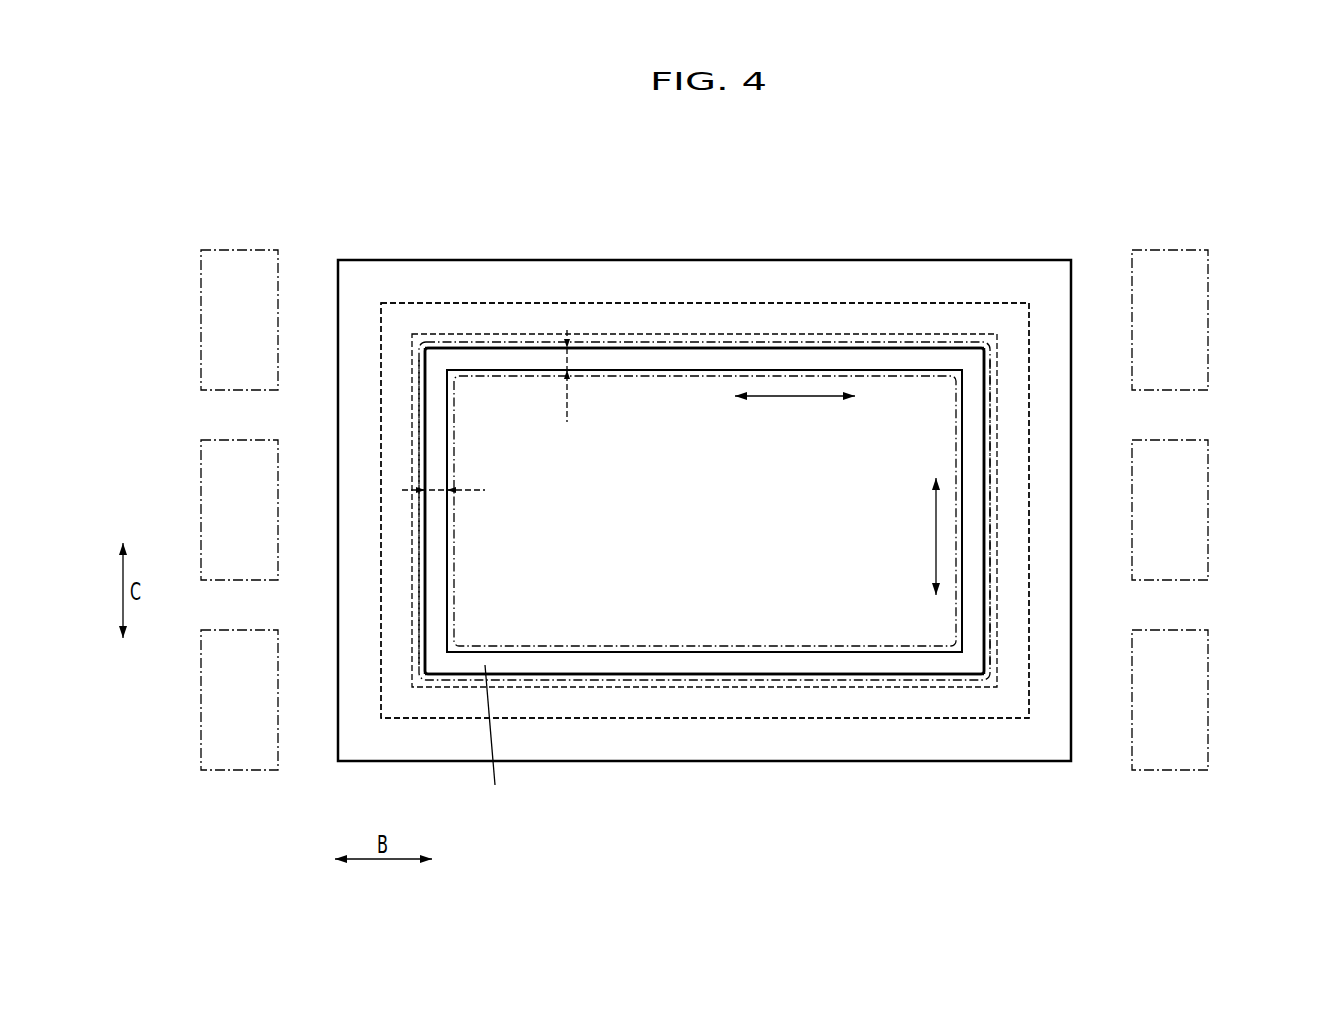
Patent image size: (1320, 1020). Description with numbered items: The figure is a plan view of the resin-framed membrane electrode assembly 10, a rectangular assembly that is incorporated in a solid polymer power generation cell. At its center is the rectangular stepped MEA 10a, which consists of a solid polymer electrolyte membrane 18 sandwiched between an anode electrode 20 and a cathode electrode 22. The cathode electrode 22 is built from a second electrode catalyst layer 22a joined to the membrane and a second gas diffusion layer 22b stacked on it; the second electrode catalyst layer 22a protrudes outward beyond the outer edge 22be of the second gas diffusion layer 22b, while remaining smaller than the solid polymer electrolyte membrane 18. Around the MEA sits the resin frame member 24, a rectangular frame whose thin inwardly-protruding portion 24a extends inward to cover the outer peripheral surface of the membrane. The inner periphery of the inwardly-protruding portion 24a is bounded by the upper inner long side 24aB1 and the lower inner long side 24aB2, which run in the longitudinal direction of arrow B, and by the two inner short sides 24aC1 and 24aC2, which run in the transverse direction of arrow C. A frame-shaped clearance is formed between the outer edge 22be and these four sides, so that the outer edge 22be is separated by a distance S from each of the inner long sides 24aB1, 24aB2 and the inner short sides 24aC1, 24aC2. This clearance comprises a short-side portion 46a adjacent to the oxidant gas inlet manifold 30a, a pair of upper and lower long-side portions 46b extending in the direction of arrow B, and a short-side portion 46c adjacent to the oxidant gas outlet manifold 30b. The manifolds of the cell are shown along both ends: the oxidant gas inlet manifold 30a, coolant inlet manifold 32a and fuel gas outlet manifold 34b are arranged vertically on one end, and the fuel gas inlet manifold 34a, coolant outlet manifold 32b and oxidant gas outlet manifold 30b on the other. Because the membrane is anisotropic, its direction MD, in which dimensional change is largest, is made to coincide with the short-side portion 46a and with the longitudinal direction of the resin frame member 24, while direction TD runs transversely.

The resin-framed membrane electrode assembly 10 is at (1086, 205).
The stepped MEA 10a is at (986, 300).
The solid polymer electrolyte membrane 18 is at (705, 559).
The anode electrode 20 is at (615, 705).
The cathode electrode 22 is at (704, 598).
The second electrode catalyst layer 22a is at (860, 685).
The second gas diffusion layer 22b is at (898, 630).
The outer edge of the second gas diffusion layer 22be is at (655, 652).
The resin frame member 24 is at (714, 257).
The inwardly-protruding portion 24a is at (778, 692).
The inner long side 24aB1 is at (858, 351).
The inner long side 24aB2 is at (563, 667).
The inner short side 24aC1 is at (428, 440).
The inner short side 24aC2 is at (980, 616).
The oxidant gas inlet manifold 30a is at (239, 320).
The oxidant gas outlet manifold 30b is at (1170, 700).
The coolant inlet manifold 32a is at (240, 510).
The coolant outlet manifold 32b is at (1170, 510).
The fuel gas inlet manifold 34a is at (1170, 320).
The fuel gas outlet manifold 34b is at (239, 700).
The short-side portion of the clearance 46a is at (420, 617).
The long-side portions of the clearance 46b is at (782, 342).
The short-side portion of the clearance 46c is at (990, 405).